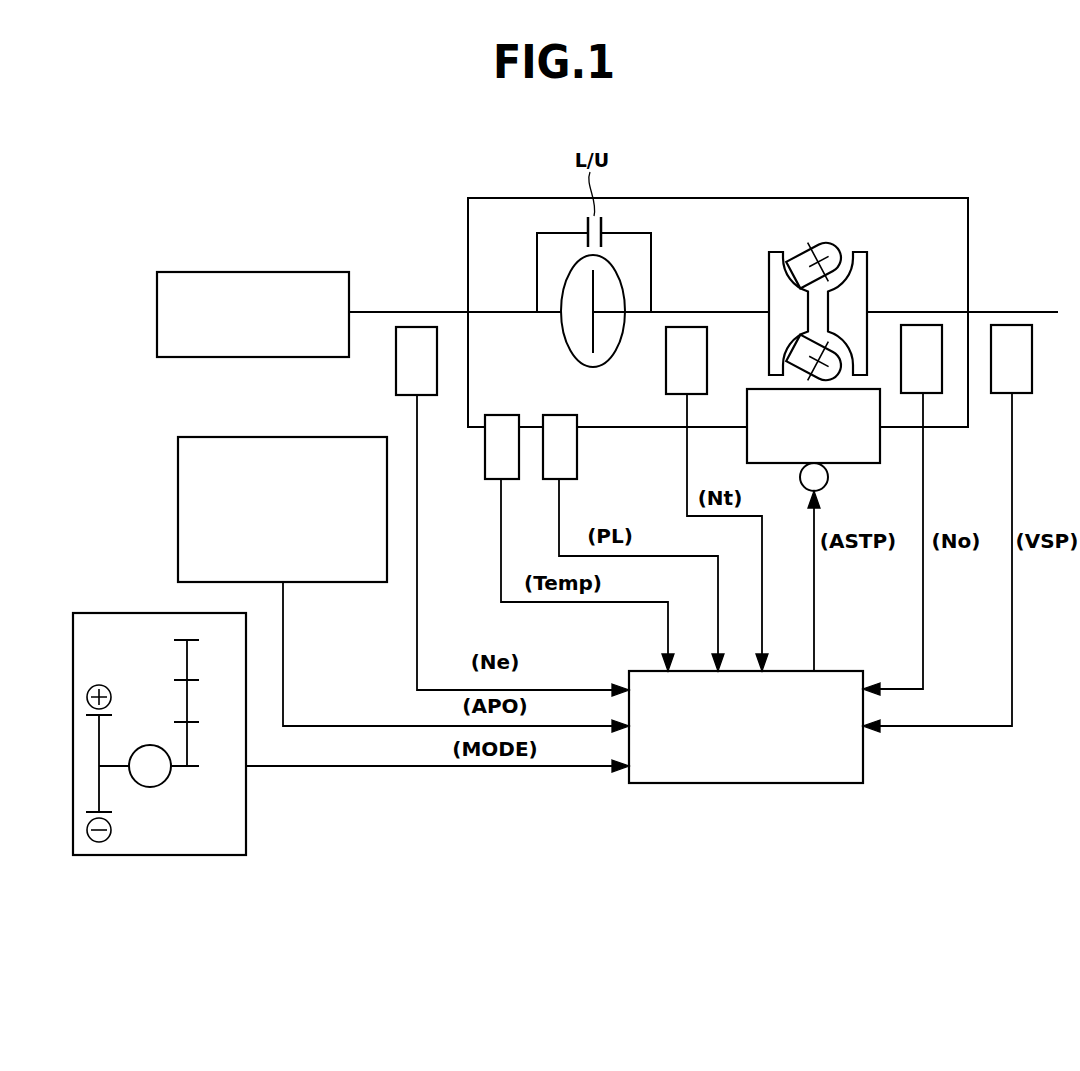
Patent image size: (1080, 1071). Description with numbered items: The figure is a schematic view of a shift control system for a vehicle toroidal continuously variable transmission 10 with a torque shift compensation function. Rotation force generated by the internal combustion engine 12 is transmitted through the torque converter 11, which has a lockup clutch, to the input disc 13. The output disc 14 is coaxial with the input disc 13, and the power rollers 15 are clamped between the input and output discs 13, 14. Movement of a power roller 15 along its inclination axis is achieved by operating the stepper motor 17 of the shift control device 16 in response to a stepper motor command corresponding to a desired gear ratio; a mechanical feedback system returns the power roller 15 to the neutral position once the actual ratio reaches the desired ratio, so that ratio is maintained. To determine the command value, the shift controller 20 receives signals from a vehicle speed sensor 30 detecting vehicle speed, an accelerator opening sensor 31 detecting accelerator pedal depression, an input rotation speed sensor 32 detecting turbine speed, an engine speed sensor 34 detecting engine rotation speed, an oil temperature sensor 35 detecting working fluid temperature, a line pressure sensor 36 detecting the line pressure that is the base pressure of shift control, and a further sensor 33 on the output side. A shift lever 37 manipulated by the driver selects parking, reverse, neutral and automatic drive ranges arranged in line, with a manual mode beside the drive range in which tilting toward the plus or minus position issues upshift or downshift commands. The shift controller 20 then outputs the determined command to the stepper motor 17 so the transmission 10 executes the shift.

The toroidal continuously variable transmission 10 is at (748, 197).
The torque converter 11 is at (563, 333).
The internal combustion engine 12 is at (305, 272).
The input disc 13 is at (768, 283).
The output disc 14 is at (868, 283).
The power roller 15 is at (832, 252).
The shift control device 16 is at (858, 465).
The shift actuator (stepper motor) 17 is at (802, 487).
The shift controller 20 is at (863, 755).
The vehicle speed sensor 30 is at (1023, 393).
The accelerator opening sensor 31 is at (223, 437).
The input rotation speed sensor 32 is at (665, 362).
The output rotation speed sensor 33 is at (932, 393).
The engine speed sensor 34 is at (395, 370).
The oil temperature sensor 35 is at (490, 483).
The line pressure sensor 36 is at (577, 457).
The shift lever 37 is at (166, 779).